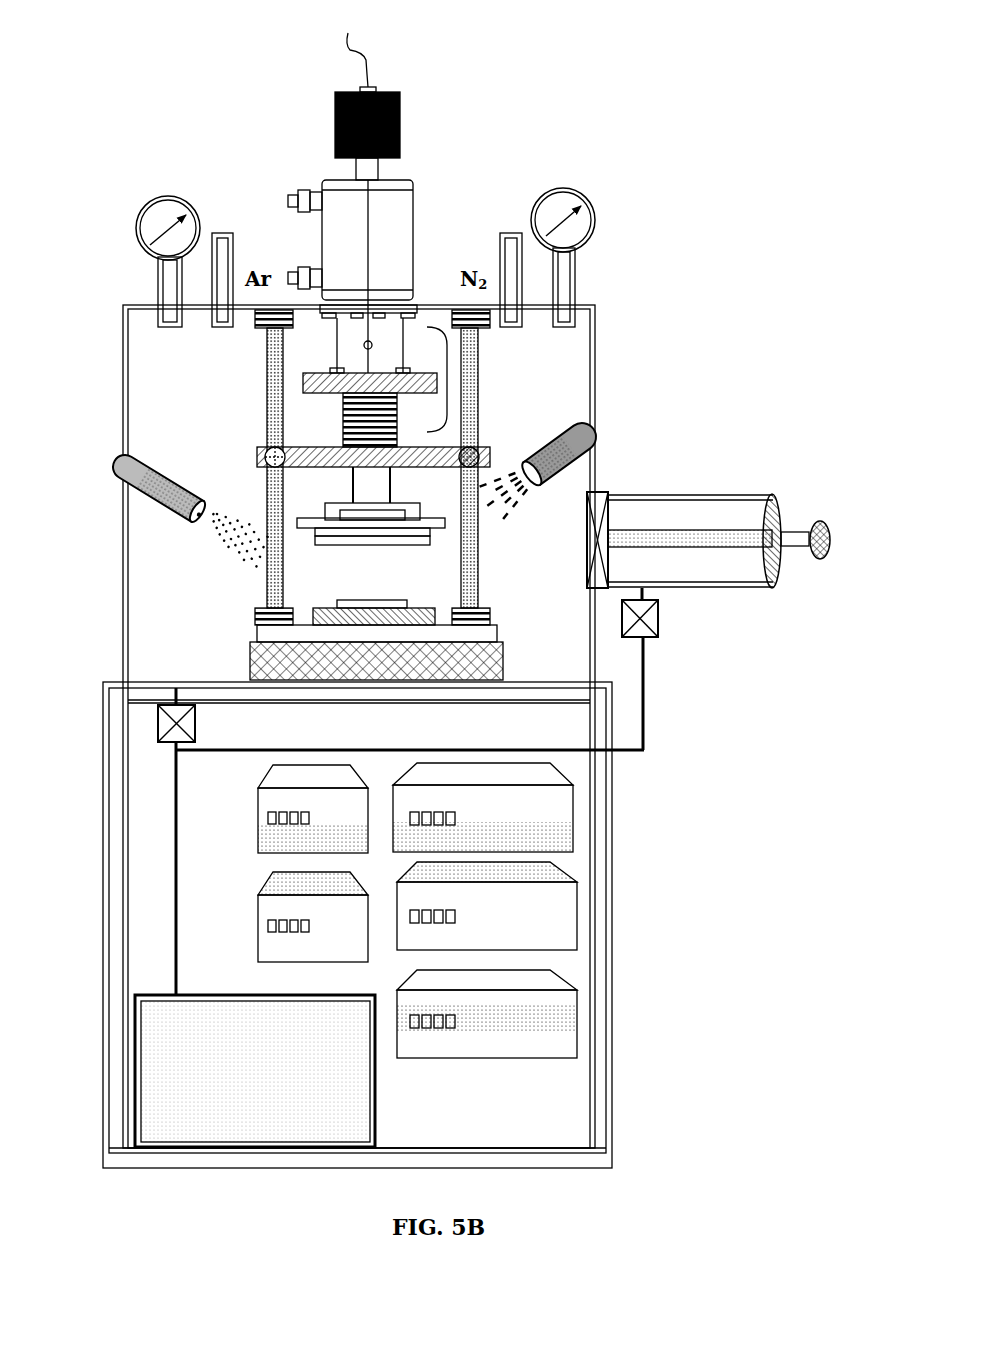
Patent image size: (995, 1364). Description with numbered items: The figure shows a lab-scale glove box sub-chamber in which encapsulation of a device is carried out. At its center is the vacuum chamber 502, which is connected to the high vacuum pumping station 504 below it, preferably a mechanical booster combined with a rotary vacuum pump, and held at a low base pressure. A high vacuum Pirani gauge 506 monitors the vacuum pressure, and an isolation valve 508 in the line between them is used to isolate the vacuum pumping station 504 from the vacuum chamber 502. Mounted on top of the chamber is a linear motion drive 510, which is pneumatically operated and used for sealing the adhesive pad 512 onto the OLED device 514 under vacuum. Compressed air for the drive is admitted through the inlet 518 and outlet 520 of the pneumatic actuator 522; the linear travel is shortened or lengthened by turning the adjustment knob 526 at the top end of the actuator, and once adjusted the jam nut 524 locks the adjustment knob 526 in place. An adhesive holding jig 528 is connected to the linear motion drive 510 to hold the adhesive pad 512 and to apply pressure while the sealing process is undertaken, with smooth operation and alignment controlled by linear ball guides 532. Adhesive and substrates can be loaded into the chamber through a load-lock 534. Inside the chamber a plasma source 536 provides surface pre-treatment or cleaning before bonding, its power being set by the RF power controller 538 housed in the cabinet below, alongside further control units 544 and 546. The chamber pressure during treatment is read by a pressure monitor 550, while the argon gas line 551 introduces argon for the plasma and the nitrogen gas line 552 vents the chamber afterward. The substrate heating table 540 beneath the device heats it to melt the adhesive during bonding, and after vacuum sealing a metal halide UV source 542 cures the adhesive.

The vacuum chamber 502 is at (124, 345).
The high vacuum pumping station 504 is at (195, 1152).
The high vacuum Pirani gauge 506 is at (228, 826).
The isolation valve 508 is at (156, 725).
The linear motion drive 510 is at (447, 380).
The adhesive pad 512 is at (400, 545).
The OLED device 514 is at (388, 603).
The inlet 518 is at (291, 200).
The outlet 520 is at (297, 276).
The pneumatic actuator 522 is at (412, 180).
The jam nut 524 is at (350, 48).
The adjustment knob 526 is at (336, 115).
The adhesive holding jig 528 is at (345, 504).
The linear ball guides 532 is at (263, 455).
The load-lock 534 is at (775, 588).
The plasma source 536 is at (122, 468).
The RF power controller 538 is at (578, 880).
The substrate heating table 540 is at (505, 663).
The UV source 542 is at (582, 430).
The controller unit 544 is at (578, 791).
The controller unit 546 is at (578, 988).
The pressure monitor 550 is at (600, 220).
The argon gas line 551 is at (222, 233).
The nitrogen gas line 552 is at (512, 233).